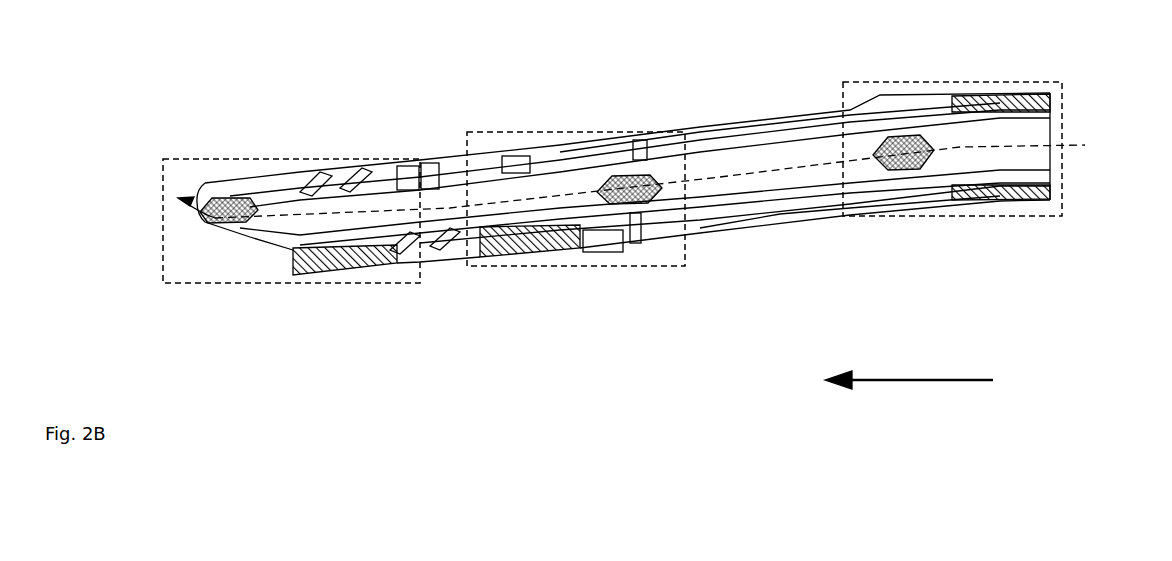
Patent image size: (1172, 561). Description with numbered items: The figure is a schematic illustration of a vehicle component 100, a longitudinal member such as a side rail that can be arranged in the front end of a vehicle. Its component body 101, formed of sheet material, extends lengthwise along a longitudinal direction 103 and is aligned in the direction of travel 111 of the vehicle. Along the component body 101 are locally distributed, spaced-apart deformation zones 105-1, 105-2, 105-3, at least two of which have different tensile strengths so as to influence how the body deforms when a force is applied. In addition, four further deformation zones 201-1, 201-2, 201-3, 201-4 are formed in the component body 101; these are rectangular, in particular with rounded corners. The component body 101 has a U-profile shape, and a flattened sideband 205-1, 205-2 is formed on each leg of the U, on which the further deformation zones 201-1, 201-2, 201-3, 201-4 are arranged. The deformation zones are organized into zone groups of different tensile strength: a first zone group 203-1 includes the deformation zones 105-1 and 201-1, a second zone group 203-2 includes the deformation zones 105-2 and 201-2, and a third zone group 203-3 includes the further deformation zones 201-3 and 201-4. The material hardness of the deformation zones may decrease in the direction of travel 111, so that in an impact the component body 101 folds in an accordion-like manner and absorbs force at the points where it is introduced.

The vehicle component 100 is at (404, 97).
The component body 101 is at (380, 175).
The longitudinal direction 103 is at (652, 174).
The deformation zone 105-1 is at (240, 212).
The deformation zone 105-2 is at (622, 183).
The deformation zone 105-3 is at (877, 138).
The direction of travel 111 is at (909, 370).
The further deformation zone 201-1 is at (338, 260).
The further deformation zone 201-2 is at (540, 247).
The further deformation zone 201-3 is at (1027, 197).
The further deformation zone 201-4 is at (997, 100).
The first zone group 203-1 is at (195, 285).
The second zone group 203-2 is at (647, 267).
The third zone group 203-3 is at (875, 217).
The flattened sideband 205-1 is at (787, 208).
The flattened sideband 205-2 is at (747, 128).